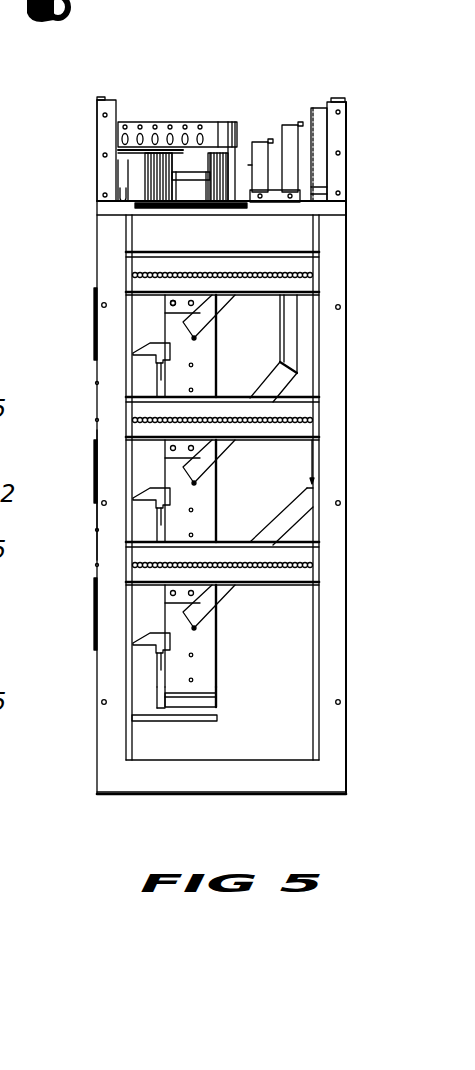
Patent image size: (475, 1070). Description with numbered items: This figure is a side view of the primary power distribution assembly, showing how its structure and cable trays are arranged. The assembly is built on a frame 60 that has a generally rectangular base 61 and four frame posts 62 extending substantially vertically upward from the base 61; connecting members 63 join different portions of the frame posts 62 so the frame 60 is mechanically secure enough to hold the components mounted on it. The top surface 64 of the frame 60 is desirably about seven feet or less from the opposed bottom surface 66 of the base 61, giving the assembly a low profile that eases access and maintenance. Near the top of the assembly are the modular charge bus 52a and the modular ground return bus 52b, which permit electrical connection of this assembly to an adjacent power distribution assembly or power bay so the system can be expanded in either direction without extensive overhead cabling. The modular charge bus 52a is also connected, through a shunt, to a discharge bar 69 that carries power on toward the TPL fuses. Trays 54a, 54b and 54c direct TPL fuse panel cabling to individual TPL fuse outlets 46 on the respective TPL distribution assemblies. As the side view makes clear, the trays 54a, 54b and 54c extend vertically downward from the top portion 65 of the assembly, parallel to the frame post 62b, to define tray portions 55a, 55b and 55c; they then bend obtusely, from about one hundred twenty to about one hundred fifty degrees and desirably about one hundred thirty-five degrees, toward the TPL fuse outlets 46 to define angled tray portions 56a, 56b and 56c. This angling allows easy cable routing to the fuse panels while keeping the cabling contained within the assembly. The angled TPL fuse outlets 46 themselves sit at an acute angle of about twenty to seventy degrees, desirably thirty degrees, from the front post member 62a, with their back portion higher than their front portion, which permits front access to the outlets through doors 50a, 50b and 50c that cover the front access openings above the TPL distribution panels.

The TPL fuse outlet 46 is at (135, 347).
The door 50a is at (92, 303).
The door 50b is at (95, 445).
The door 50c is at (95, 595).
The modular charge bus 52a is at (155, 128).
The modular ground return bus 52b is at (220, 155).
The tray 54a is at (315, 103).
The tray 54b is at (318, 108).
The tray 54c is at (264, 140).
The tray portion 55a is at (322, 160).
The tray portion 55b is at (291, 137).
The tray portion 55c is at (248, 165).
The angled tray portion 56a is at (198, 321).
The angled tray portion 56b is at (205, 466).
The angled tray portion 56c is at (205, 613).
The frame 60 is at (348, 388).
The base 61 is at (165, 780).
The frame post 62 is at (100, 513).
The front post member 62a is at (110, 242).
The frame post 62b is at (333, 272).
The connecting member 63 is at (287, 403).
The top surface 64 is at (105, 100).
The top portion 65 is at (335, 208).
The bottom surface 66 is at (278, 794).
The discharge bar 69 is at (167, 302).